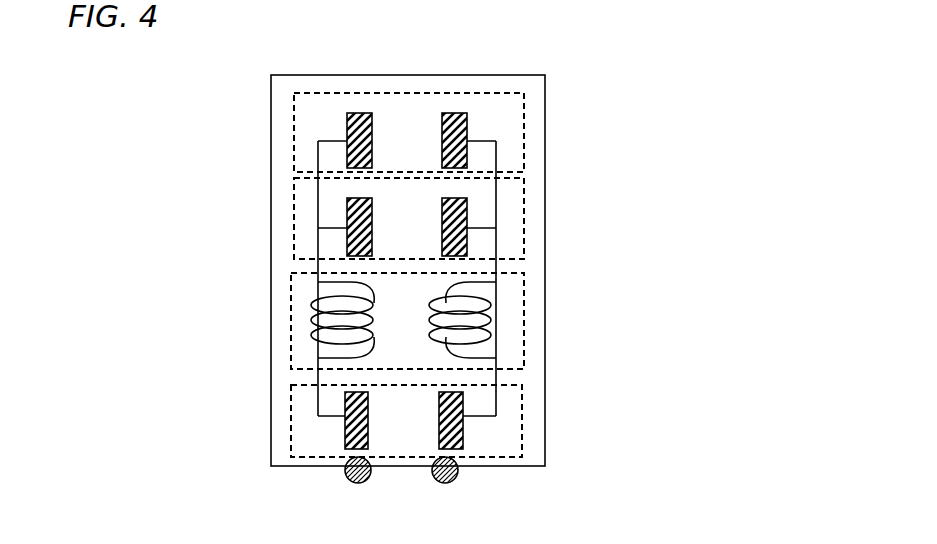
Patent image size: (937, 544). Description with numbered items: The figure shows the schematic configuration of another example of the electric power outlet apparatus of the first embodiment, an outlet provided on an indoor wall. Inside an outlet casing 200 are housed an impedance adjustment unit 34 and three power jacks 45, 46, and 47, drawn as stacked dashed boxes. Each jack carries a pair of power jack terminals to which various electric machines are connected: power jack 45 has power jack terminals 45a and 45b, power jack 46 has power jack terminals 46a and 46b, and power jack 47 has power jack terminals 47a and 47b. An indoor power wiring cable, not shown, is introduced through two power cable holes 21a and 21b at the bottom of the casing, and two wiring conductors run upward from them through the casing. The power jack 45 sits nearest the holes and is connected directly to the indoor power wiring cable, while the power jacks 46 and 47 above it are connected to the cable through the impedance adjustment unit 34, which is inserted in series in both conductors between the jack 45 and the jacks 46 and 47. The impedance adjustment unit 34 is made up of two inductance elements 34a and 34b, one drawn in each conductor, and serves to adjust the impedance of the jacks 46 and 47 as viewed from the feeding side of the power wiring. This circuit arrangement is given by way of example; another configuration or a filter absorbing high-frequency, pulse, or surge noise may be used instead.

The outlet casing 200 is at (545, 262).
The power jack 47 is at (294, 130).
The power jack terminal 47a is at (362, 113).
The power jack terminal 47b is at (456, 113).
The power jack 46 is at (294, 222).
The power jack terminal 46a is at (362, 198).
The power jack terminal 46b is at (467, 213).
The impedance adjustment unit 34 is at (291, 326).
The inductance element 34a is at (372, 340).
The inductance element 34b is at (491, 313).
The power jack 45 is at (291, 425).
The power jack terminal 45a is at (368, 400).
The power jack terminal 45b is at (463, 420).
The power cable hole 21a is at (354, 483).
The power cable hole 21b is at (440, 483).